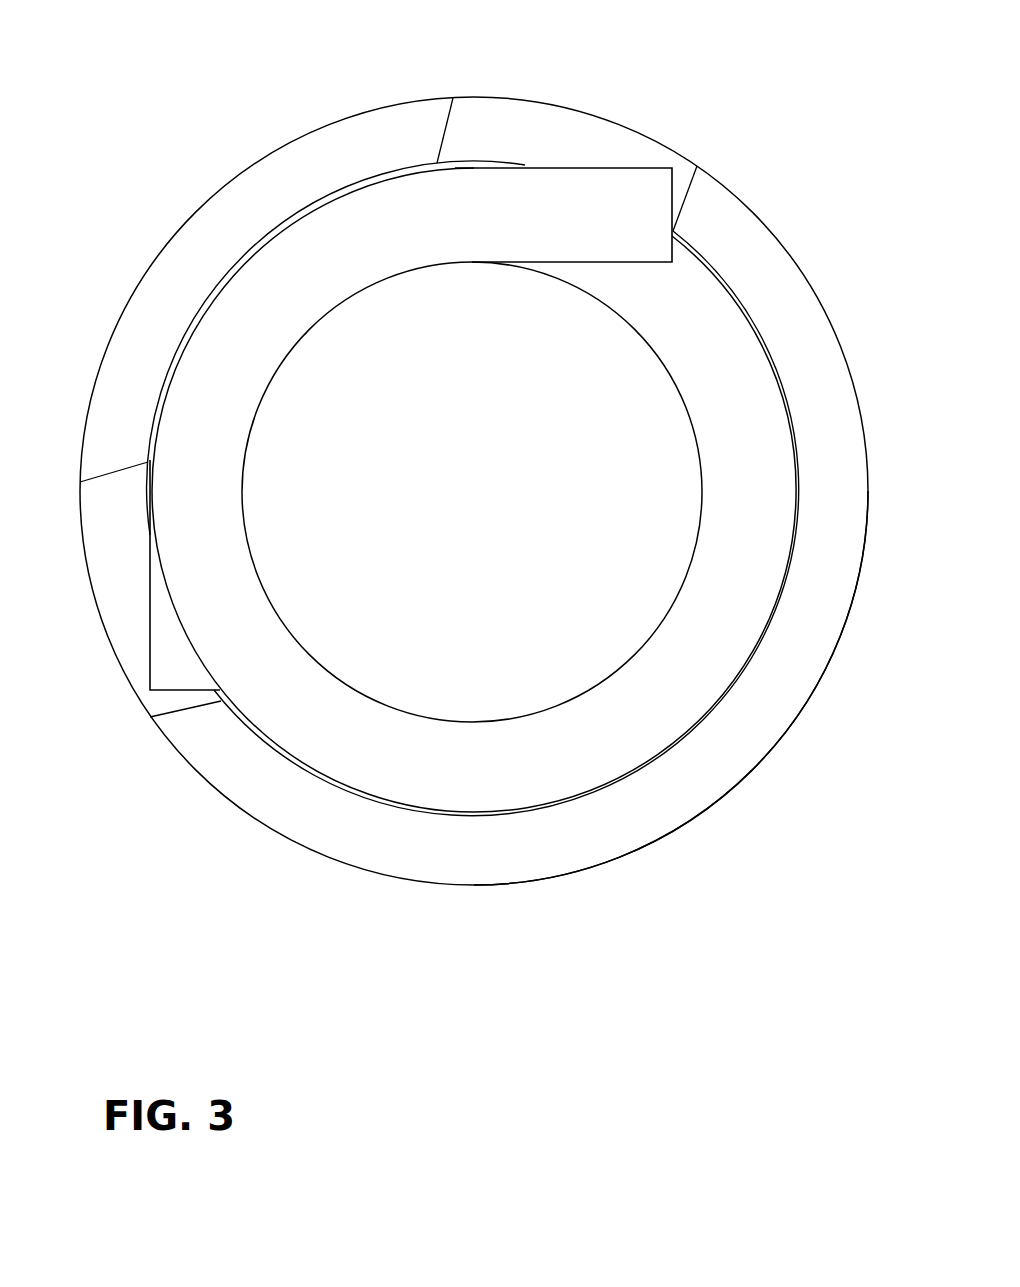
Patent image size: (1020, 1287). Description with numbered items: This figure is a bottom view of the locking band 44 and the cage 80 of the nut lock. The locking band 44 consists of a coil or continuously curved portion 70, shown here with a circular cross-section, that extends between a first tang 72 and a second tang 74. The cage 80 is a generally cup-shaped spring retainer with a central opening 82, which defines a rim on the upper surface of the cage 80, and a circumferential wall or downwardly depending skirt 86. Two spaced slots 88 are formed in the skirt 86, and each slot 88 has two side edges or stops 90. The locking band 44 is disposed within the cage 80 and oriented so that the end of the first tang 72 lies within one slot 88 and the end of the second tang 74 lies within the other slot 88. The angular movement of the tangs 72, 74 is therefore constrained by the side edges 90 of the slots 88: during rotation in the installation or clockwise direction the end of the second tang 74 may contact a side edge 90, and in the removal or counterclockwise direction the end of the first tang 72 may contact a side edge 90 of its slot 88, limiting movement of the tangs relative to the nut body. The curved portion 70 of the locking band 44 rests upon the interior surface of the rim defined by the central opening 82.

The locking band 44 is at (573, 806).
The coil or continuously curved portion 70 is at (692, 673).
The first tang 72 is at (617, 205).
The second tang 74 is at (168, 661).
The cage 80 is at (737, 792).
The central opening 82 is at (432, 510).
The skirt 86 is at (283, 845).
The slot 88 is at (547, 132).
The side edge 90 is at (450, 130).